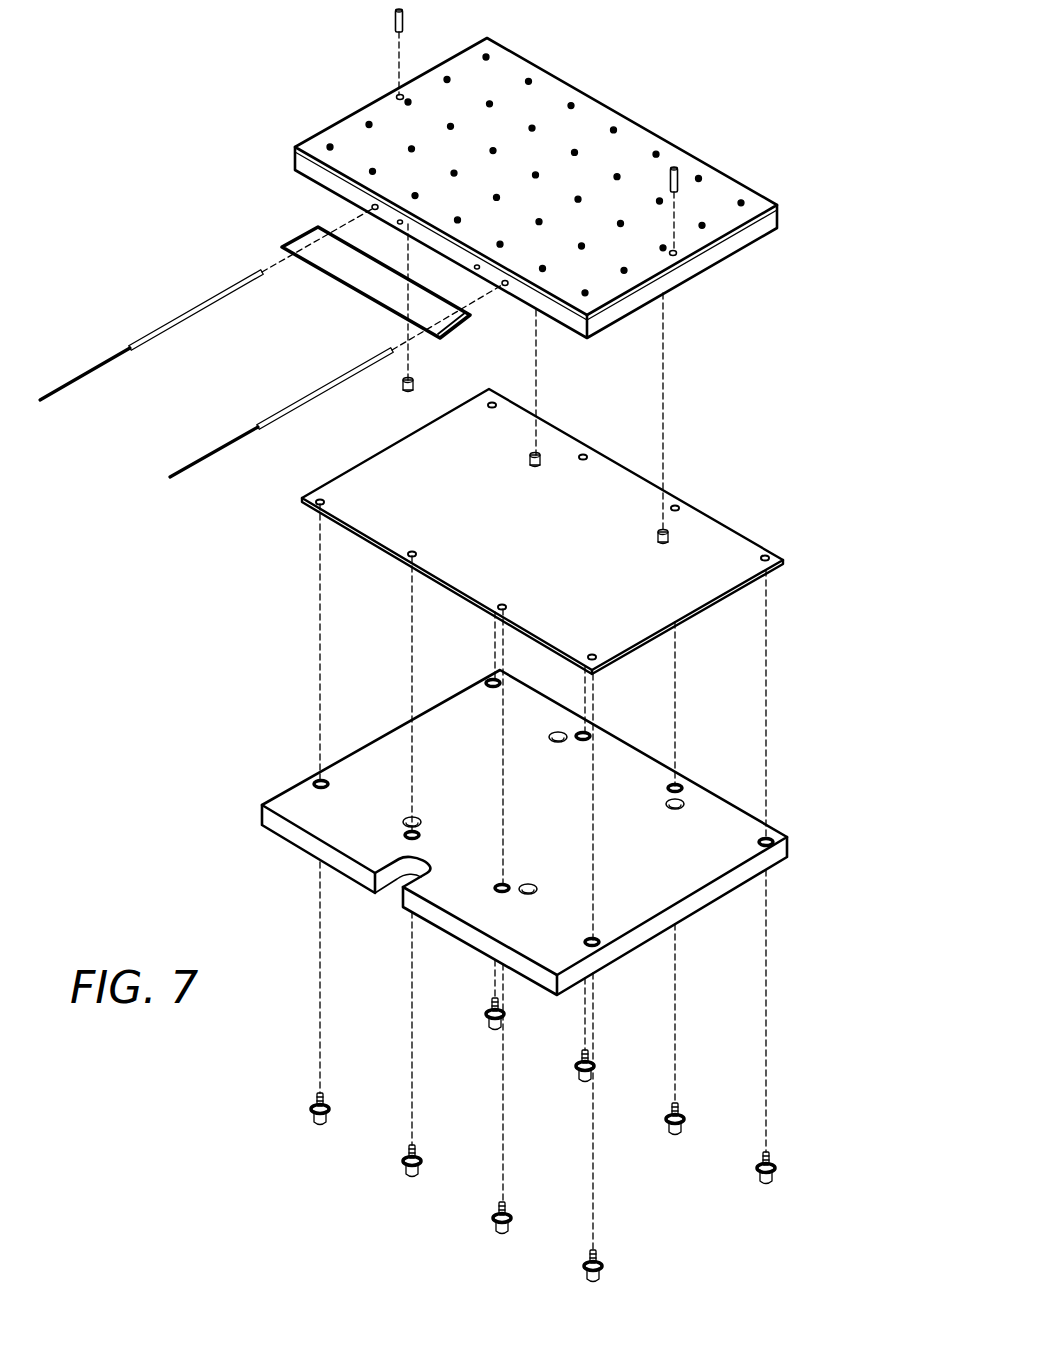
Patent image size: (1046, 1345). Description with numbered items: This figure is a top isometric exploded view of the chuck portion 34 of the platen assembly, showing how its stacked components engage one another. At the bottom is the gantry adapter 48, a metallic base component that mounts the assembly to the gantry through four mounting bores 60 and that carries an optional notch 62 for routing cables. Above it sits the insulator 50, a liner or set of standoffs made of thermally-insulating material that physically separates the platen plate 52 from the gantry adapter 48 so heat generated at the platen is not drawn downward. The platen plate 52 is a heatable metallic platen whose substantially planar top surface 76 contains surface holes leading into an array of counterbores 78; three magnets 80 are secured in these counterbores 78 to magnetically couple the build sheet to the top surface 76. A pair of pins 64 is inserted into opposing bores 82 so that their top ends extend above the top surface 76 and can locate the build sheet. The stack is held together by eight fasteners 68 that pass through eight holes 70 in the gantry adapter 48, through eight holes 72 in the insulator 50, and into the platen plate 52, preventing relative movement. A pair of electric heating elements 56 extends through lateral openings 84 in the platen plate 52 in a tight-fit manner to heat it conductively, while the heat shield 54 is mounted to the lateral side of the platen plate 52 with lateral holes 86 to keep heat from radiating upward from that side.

The chuck portion 34 is at (730, 63).
The gantry adapter 48 is at (703, 903).
The insulator 50 is at (705, 605).
The platen plate 52 is at (680, 277).
The heat shield 54 is at (352, 276).
The heating elements 56 is at (210, 297).
The mounting bores 60 is at (429, 815).
The notch 62 is at (390, 897).
The pins 64 is at (394, 17).
The fasteners 68 is at (311, 1110).
The holes 70 is at (310, 794).
The holes 72 is at (298, 500).
The top surface 76 is at (630, 133).
The counterbores 78 is at (580, 94).
The magnets 80 is at (402, 387).
The bores 82 is at (404, 92).
The lateral openings 84 is at (364, 203).
The lateral holes 86 is at (482, 251).